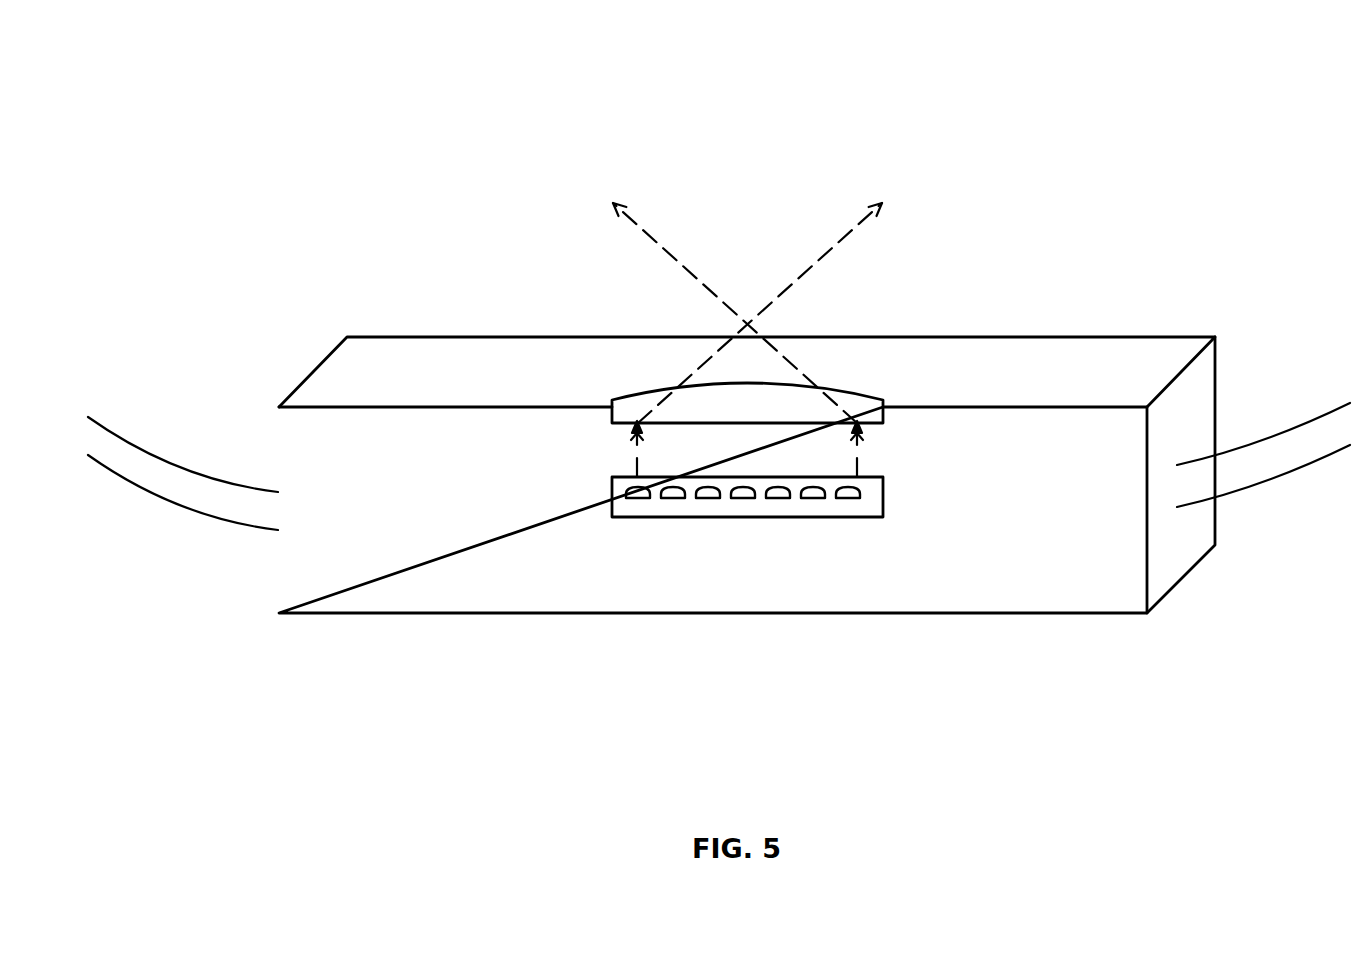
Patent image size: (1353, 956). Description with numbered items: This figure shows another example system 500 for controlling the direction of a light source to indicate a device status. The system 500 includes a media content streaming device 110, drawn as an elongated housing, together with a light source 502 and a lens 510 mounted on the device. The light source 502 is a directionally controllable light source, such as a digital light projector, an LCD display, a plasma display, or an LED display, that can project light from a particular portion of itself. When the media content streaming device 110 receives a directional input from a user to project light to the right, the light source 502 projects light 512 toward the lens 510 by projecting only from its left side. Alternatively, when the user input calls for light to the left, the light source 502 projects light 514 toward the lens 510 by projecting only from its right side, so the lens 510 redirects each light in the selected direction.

The system for controlling the direction of a light source 500 is at (784, 75).
The media content streaming device 110 is at (1050, 336).
The lens 510 is at (883, 400).
The light source 502 is at (883, 510).
The light 512 is at (636, 462).
The light 514 is at (858, 468).